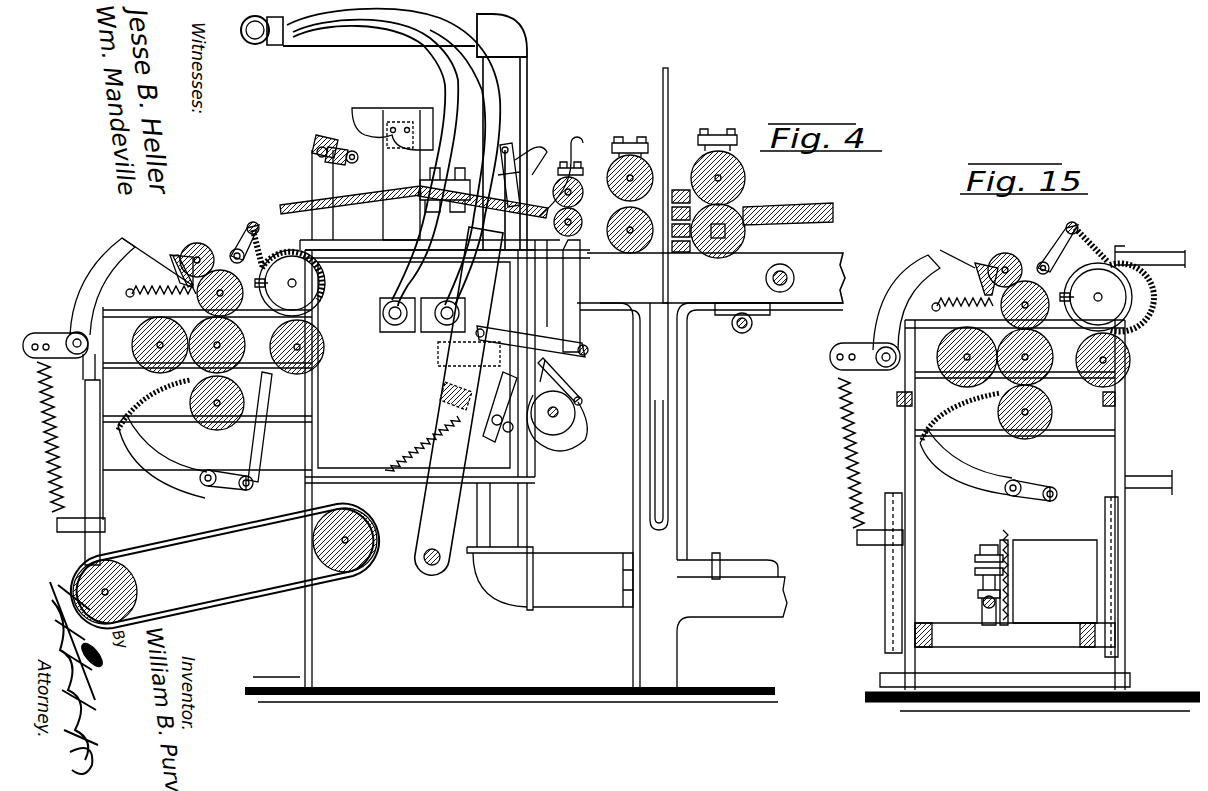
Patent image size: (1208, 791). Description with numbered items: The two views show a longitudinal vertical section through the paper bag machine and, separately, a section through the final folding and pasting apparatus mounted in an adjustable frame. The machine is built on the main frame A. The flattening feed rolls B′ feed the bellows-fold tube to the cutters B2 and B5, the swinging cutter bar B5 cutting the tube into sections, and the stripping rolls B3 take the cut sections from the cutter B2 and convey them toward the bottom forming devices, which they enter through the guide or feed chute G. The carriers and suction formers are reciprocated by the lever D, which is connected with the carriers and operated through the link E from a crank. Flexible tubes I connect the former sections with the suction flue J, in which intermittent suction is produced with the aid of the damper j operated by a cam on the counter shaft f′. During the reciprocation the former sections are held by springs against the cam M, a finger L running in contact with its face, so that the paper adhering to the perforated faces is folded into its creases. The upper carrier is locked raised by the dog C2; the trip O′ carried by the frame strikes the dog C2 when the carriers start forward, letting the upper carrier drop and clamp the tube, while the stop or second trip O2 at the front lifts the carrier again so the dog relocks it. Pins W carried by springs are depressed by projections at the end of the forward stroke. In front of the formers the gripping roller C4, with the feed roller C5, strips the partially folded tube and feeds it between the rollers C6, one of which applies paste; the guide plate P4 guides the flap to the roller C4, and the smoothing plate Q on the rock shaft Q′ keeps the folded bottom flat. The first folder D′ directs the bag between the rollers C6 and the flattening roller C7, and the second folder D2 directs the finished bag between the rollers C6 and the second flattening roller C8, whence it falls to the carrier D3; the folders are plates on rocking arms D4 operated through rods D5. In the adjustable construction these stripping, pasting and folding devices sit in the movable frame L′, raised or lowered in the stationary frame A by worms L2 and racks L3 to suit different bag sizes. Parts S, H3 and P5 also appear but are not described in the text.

In FIG. 4, the suction flue J is at (366, 40).
In FIG. 4, the flexible tubes I is at (379, 185).
In FIG. 4, the guide or feed chute G is at (507, 137).
In FIG. 4, the cam M is at (390, 110).
In FIG. 4, the slide bar S is at (358, 195).
In FIG. 4, the pins W is at (312, 148).
In FIG. 4, the stop or second trip O2 is at (324, 152).
In FIG. 4, the finger L is at (399, 193).
In FIG. 4, the clamp H3 is at (448, 176).
In FIG. 4, the trip or spring dog O′ is at (506, 143).
In FIG. 4, the dog C2 is at (522, 158).
In FIG. 4, the stripping rolls B3 is at (596, 195).
In FIG. 4, the swinging cutter bar B5 is at (670, 118).
In FIG. 4, the cutter B2 is at (708, 193).
In FIG. 15, the cutter B2 is at (961, 416).
In FIG. 4, the flattening feed rolls B′ is at (748, 205).
In FIG. 4, the guide plate P4 is at (580, 268).
In FIG. 4, the carrier D3 is at (236, 532).
In FIG. 4, the rods D5 is at (268, 396).
In FIG. 4, the flattening roller C7 is at (150, 345).
In FIG. 15, the flattening roller C7 is at (959, 357).
In FIG. 4, the rollers C6 is at (223, 308).
In FIG. 15, the rollers C6 is at (1025, 280).
In FIG. 4, the feed roller C5 is at (328, 348).
In FIG. 15, the feed roller C5 is at (1130, 354).
In FIG. 4, the second flattening roller C8 is at (225, 402).
In FIG. 15, the second flattening roller C8 is at (1052, 404).
In FIG. 4, the gripping roller C4 is at (340, 272).
In FIG. 15, the gripping roller C4 is at (1140, 296).
In FIG. 4, the rock shaft Q′ is at (246, 236).
In FIG. 4, the rocking arms D4 is at (112, 262).
In FIG. 15, the rocking arms D4 is at (880, 328).
In FIG. 4, the first folder D′ is at (159, 265).
In FIG. 15, the first folder D′ is at (980, 470).
In FIG. 4, the second folder D2 is at (154, 402).
In FIG. 4, the lever D is at (459, 401).
In FIG. 4, the link E is at (513, 334).
In FIG. 4, the link P5 is at (580, 388).
In FIG. 4, the counter shaft f′ is at (603, 414).
In FIG. 4, the damper j is at (451, 421).
In FIG. 15, the movable frame L′ is at (920, 506).
In FIG. 15, the racks L3 is at (1003, 530).
In FIG. 15, the worms L2 is at (975, 558).
In FIG. 15, the smoothing plate Q is at (1095, 240).
In FIG. 15, the main frame A is at (1150, 262).